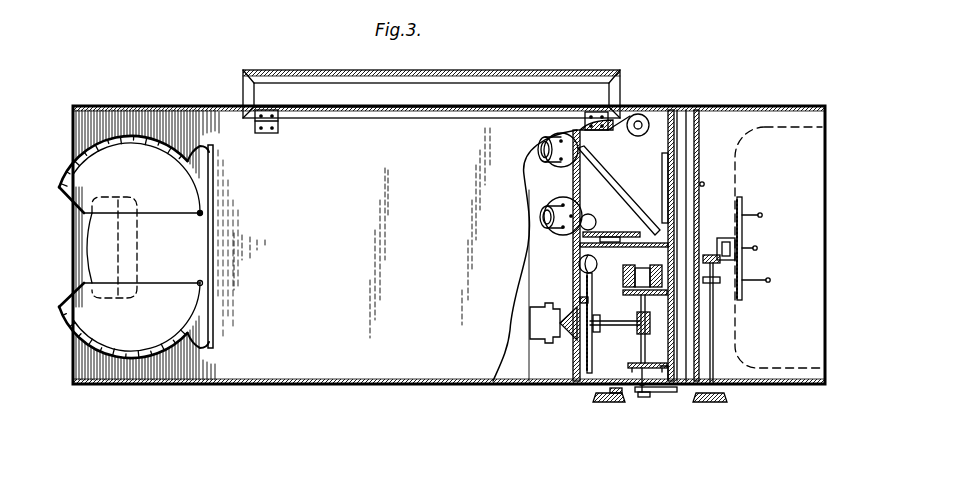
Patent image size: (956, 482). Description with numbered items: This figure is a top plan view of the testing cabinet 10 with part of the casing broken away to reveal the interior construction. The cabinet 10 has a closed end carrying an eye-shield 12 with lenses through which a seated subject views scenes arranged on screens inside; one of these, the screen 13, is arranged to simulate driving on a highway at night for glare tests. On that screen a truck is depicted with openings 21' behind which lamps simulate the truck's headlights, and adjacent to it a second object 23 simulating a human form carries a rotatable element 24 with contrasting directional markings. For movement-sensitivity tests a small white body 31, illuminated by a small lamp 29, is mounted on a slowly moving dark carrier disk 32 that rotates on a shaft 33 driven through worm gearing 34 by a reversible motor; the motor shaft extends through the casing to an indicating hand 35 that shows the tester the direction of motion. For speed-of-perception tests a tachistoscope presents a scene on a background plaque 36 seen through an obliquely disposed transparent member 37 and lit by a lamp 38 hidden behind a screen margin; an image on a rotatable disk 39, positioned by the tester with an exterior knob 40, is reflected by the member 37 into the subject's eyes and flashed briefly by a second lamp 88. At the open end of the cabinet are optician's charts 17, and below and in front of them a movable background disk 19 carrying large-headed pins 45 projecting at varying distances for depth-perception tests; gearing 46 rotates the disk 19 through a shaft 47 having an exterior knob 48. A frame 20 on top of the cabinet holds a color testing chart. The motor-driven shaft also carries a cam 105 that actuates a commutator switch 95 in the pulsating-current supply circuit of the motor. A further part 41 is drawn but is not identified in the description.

The cabinet 10 is at (424, 415).
The eye-shield 12 is at (78, 243).
The screen 13 is at (516, 385).
The charts 17 is at (700, 205).
The background disk 19 is at (745, 205).
The frame 20 is at (560, 70).
The openings 21' is at (533, 184).
The second object 23 is at (530, 322).
The rotatable element 24 is at (562, 319).
The small lamp 29 is at (580, 260).
The small white body 31 is at (582, 300).
The carrier disk 32 is at (590, 343).
The shaft 33 is at (620, 327).
The worm gearing 34 is at (648, 331).
The indicating hand 35 is at (648, 397).
The background plaque 36 is at (662, 178).
The transparent member 37 is at (593, 160).
The lamp 38 is at (646, 117).
The rotatable disk 39 is at (627, 226).
The knob 40 is at (615, 404).
The dial scale 41 is at (73, 164).
The large-headed pins 45 is at (771, 279).
The gearing 46 is at (722, 261).
The shaft 47 is at (713, 360).
The knob 48 is at (700, 403).
The second lamp 88 is at (600, 200).
The commutator switch 95 is at (662, 393).
The cam 105 is at (636, 390).